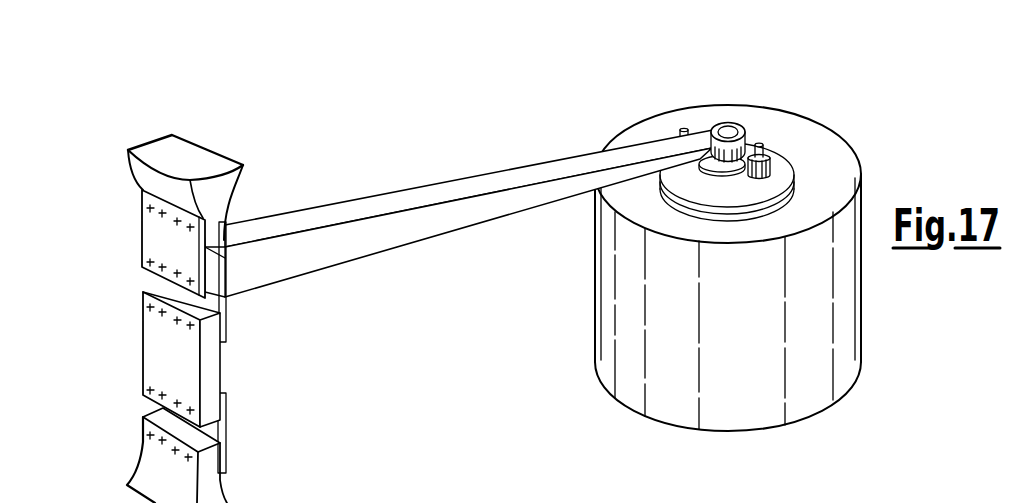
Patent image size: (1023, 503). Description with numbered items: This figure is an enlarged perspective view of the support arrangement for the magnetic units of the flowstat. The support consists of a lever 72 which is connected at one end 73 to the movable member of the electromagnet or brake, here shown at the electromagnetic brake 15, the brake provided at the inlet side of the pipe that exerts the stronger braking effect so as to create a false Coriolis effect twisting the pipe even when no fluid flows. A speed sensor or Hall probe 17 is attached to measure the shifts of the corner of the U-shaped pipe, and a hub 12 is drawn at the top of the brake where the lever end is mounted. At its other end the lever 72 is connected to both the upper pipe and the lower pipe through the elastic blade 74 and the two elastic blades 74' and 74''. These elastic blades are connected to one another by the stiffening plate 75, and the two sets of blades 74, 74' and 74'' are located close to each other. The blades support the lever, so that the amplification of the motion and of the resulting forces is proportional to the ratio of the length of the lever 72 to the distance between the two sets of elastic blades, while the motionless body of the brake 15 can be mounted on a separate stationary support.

The spindle hub 12 is at (730, 137).
The electromagnetic brake 15 is at (843, 276).
The speed sensor 17 is at (776, 156).
The lever 72 is at (398, 203).
The end of lever 73 is at (732, 131).
The elastic blade 74 is at (147, 244).
The elastic blade 74' is at (251, 282).
The elastic blade 74'' is at (252, 433).
The stiffening plate 75 is at (158, 347).